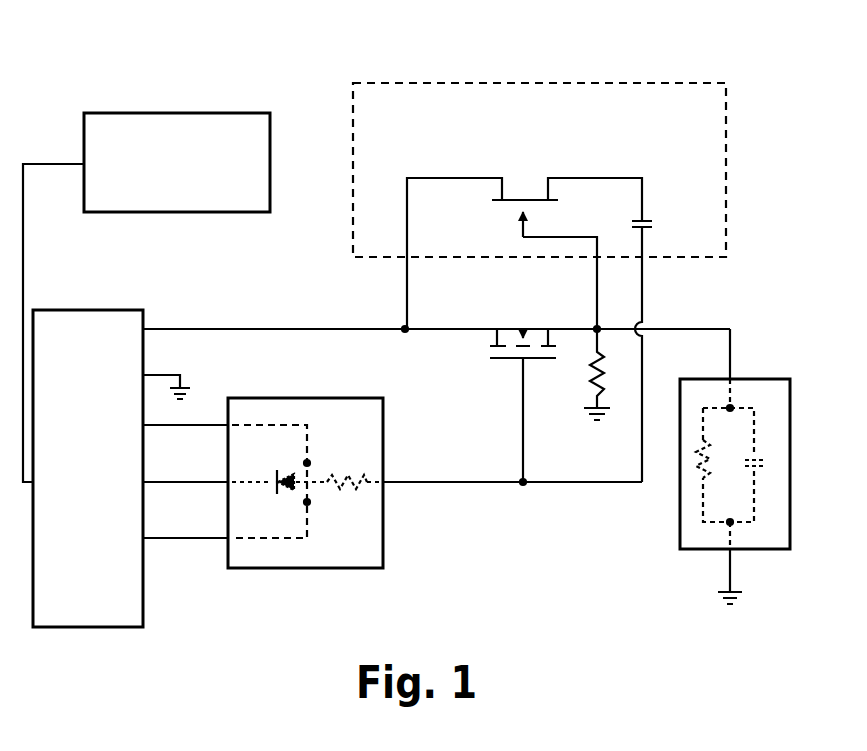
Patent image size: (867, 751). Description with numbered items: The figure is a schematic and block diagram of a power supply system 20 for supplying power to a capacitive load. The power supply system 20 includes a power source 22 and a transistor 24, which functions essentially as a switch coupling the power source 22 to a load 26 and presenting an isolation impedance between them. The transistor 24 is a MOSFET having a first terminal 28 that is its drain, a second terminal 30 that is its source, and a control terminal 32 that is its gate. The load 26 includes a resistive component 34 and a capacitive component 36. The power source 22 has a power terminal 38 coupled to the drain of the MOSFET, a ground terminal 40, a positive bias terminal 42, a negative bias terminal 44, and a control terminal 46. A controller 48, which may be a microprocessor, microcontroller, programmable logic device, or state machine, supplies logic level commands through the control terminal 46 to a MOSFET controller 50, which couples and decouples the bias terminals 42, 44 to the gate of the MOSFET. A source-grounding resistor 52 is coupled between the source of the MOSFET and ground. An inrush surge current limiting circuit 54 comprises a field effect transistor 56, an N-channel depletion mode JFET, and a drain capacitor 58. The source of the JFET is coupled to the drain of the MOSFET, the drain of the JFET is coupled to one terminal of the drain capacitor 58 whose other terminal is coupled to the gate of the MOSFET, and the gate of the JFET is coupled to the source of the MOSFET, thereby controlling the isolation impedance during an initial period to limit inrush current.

The power supply system 20 is at (312, 95).
The power source 22 is at (80, 632).
The transistor 24 is at (509, 340).
The load 26 is at (768, 379).
The first terminal 28 is at (437, 330).
The second terminal 30 is at (578, 329).
The control terminal 32 is at (521, 388).
The resistive component 34 is at (706, 452).
The capacitive component 36 is at (755, 458).
The power terminal 38 is at (147, 327).
The ground terminal 40 is at (146, 375).
The positive bias terminal 42 is at (146, 425).
The negative bias terminal 44 is at (146, 538).
The control terminal 46 is at (146, 482).
The controller 48 is at (171, 113).
The MOSFET controller 50 is at (383, 532).
The source-grounding resistor 52 is at (596, 368).
The inrush surge current limiting circuit 54 is at (620, 82).
The field effect transistor 56 is at (513, 199).
The drain capacitor 58 is at (647, 221).